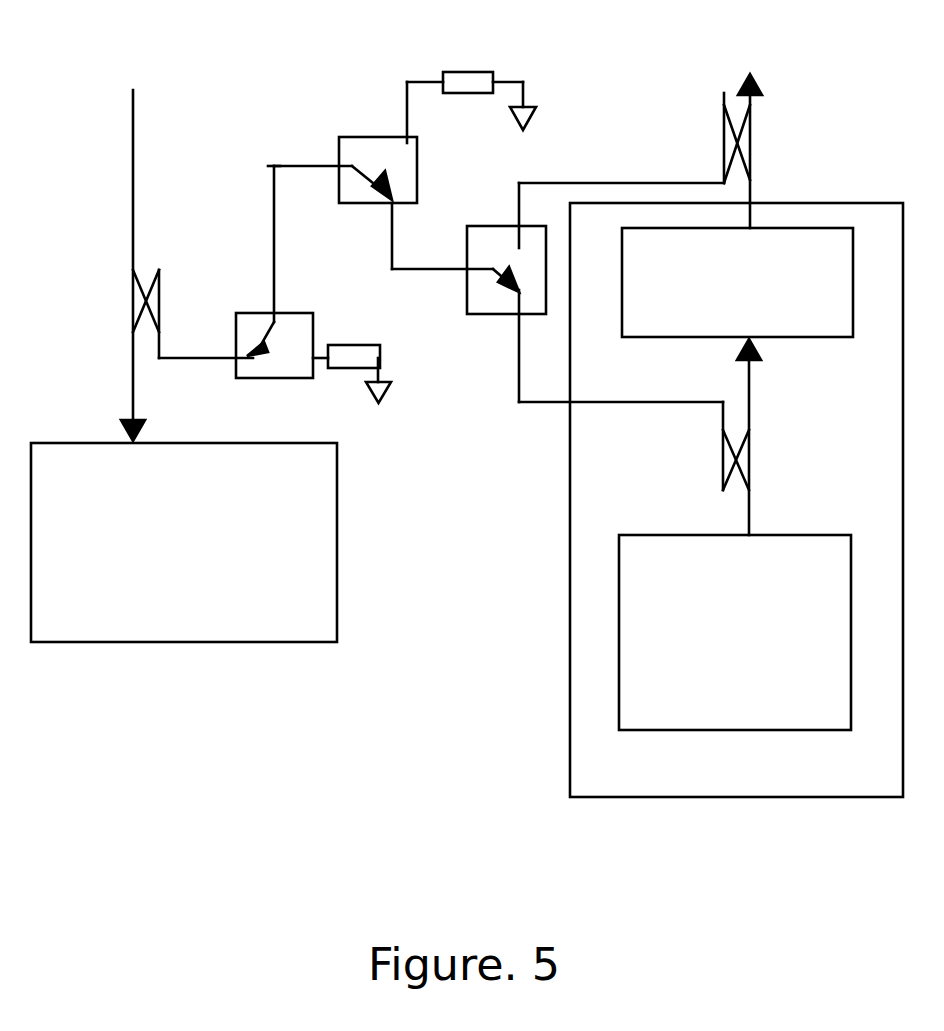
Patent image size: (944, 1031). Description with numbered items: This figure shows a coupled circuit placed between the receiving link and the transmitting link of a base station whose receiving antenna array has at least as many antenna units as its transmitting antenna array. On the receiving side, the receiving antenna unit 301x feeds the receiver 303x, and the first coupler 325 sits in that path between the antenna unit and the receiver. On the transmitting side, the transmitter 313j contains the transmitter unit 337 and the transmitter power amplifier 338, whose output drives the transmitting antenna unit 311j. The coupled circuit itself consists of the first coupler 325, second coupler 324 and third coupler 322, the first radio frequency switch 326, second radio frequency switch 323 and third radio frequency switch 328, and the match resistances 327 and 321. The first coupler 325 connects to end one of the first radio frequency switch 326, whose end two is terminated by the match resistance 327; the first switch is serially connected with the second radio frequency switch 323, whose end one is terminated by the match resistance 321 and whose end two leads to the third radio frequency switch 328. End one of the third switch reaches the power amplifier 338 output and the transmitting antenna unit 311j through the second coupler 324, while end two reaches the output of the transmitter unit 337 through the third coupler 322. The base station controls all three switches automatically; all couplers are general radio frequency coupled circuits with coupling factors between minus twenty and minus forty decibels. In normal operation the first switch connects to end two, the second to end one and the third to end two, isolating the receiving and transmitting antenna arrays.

The receiving antenna unit 301x is at (133, 231).
The receiver 303x is at (184, 542).
The transmitting antenna unit 311j is at (762, 126).
The transmitter 313j is at (736, 500).
The match resistance 321 is at (471, 76).
The third coupler 322 is at (640, 437).
The second radio frequency switch 323 is at (378, 175).
The second coupler 324 is at (634, 139).
The first coupler 325 is at (193, 314).
The first radio frequency switch 326 is at (286, 287).
The match resistance 327 is at (352, 341).
The third radio frequency switch 328 is at (469, 292).
The transmitter unit 337 is at (735, 632).
The transmitter power amplifier 338 is at (737, 282).